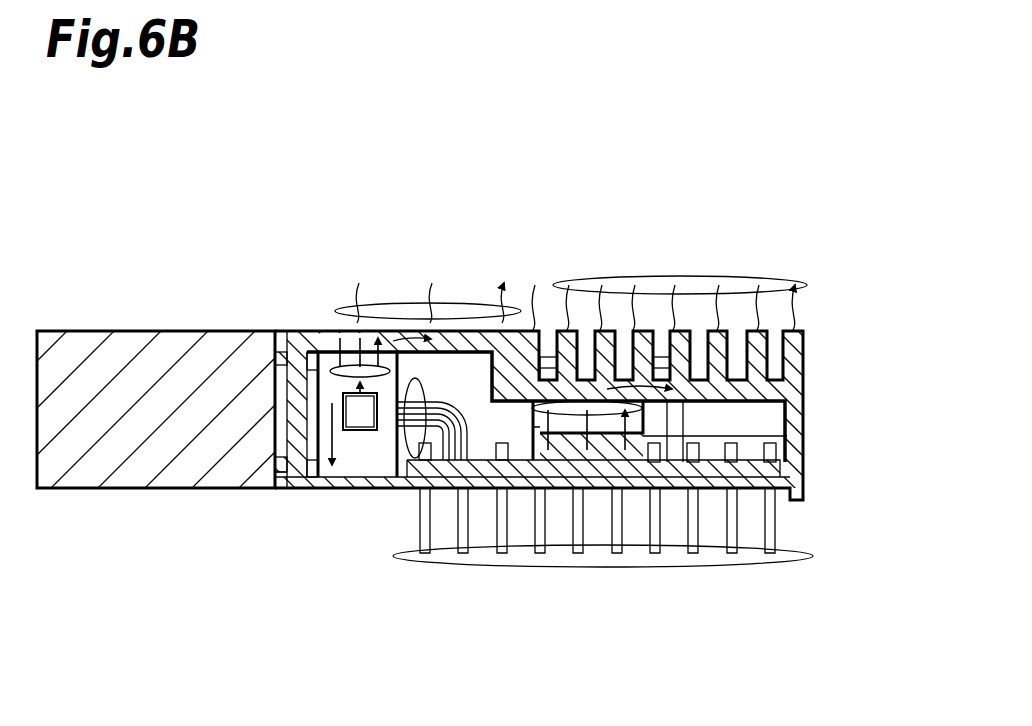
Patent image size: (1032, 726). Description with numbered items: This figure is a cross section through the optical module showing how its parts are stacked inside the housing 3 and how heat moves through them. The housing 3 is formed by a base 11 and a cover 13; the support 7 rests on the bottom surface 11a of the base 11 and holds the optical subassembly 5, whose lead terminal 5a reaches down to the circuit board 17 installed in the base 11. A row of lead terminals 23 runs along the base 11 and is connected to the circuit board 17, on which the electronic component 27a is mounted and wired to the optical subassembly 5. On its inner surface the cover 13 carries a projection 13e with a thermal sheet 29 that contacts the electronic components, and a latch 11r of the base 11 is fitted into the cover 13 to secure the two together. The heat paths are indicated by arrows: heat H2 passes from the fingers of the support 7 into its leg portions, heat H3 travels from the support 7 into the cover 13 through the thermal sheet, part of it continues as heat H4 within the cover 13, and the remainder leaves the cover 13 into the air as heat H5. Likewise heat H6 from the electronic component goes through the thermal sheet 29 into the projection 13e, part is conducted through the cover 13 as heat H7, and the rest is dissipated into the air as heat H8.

The housing 3 is at (307, 267).
The base 11 is at (213, 337).
The bottom surface 11a is at (306, 477).
The latch 11r is at (550, 356).
The cover 13 is at (292, 352).
The projection 13e is at (645, 416).
The optical subassembly 5 is at (317, 370).
The lead terminal 5a is at (425, 387).
The support 7 is at (366, 482).
The circuit board 17 is at (778, 469).
The lead terminals 23 is at (742, 553).
The electronic component 27a is at (560, 492).
The thermal sheet 29 is at (787, 436).
The heat H2 is at (365, 410).
The heat H3 is at (327, 352).
The heat H4 is at (497, 342).
The heat H5 is at (463, 317).
The heat H6 is at (335, 430).
The heat H7 is at (630, 385).
The heat H8 is at (773, 276).